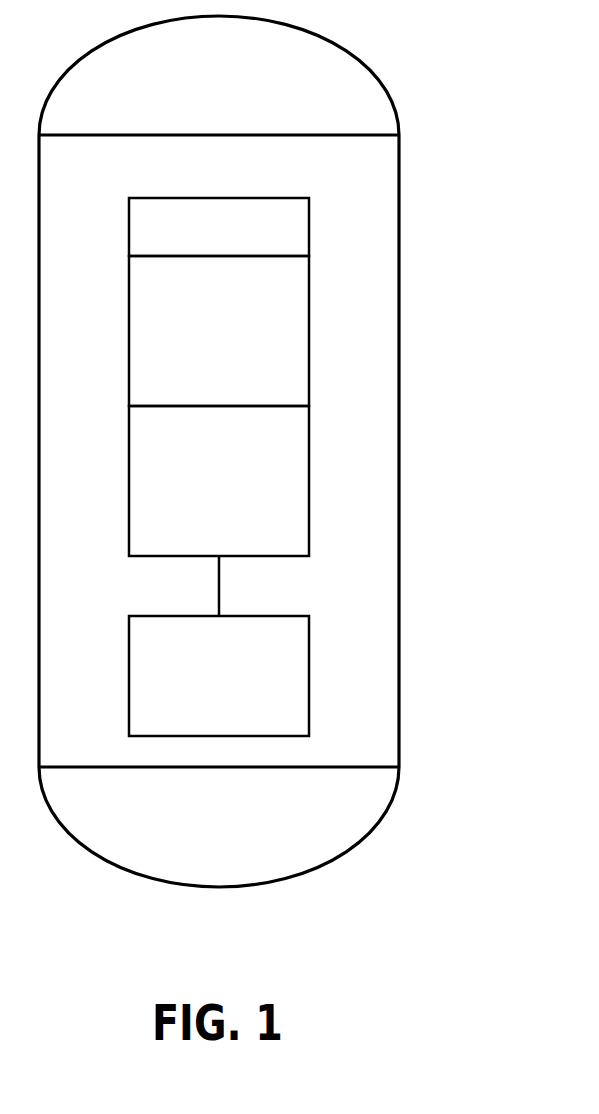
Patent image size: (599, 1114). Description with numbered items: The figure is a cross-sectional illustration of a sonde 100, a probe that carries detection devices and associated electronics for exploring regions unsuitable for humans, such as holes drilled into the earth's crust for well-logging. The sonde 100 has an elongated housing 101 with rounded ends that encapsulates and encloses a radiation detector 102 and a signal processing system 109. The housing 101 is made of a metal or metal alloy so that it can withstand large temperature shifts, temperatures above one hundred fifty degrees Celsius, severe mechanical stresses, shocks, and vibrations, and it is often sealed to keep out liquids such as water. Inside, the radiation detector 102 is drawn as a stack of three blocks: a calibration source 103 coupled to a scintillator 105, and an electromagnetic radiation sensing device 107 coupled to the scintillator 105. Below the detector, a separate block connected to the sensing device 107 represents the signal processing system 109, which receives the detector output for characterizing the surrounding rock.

The sonde 100 is at (292, 450).
The housing 101 is at (400, 275).
The radiation detector 102 is at (308, 377).
The calibration source 103 is at (219, 227).
The scintillator 105 is at (219, 331).
The electromagnetic radiation sensing device 107 is at (219, 481).
The signal processing system 109 is at (340, 677).